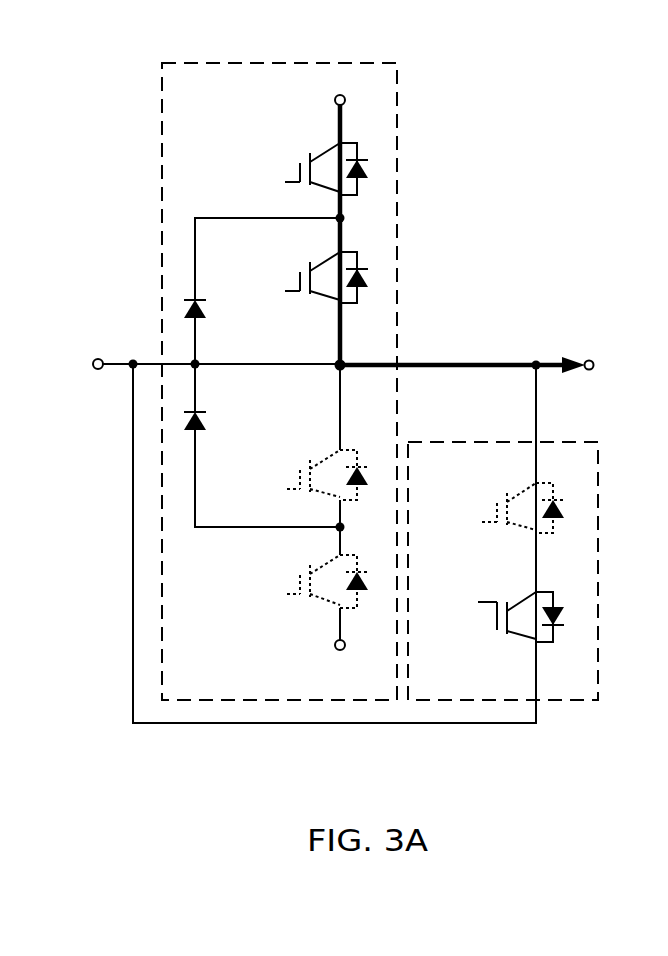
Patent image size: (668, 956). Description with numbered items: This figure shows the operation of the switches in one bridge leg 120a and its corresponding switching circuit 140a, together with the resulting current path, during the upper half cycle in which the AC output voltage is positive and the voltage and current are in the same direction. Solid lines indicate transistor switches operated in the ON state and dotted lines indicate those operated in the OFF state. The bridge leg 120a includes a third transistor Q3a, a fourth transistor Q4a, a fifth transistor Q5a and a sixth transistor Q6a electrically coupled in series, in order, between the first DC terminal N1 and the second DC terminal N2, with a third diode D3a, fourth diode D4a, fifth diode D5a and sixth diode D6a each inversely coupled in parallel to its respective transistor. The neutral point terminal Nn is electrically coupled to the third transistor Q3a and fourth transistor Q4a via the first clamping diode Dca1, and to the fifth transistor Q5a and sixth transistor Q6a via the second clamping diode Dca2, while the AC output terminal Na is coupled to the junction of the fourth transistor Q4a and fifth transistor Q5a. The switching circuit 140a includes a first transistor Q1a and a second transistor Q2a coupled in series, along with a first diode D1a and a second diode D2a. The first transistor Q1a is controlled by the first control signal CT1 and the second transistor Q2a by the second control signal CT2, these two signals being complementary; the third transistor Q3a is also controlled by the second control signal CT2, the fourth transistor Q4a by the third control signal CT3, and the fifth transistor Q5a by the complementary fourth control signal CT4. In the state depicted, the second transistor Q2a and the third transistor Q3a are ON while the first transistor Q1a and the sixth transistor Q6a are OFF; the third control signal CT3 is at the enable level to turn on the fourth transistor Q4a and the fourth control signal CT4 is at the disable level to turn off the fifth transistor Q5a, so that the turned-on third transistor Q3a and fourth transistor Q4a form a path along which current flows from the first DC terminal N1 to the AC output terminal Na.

The bridge leg 120a is at (346, 63).
The switching circuit 140a is at (497, 442).
The first DC terminal N1 is at (322, 100).
The second DC terminal N2 is at (342, 664).
The neutral point terminal Nn is at (81, 366).
The AC output terminal Na is at (601, 365).
The first transistor Q1a is at (513, 523).
The second transistor Q2a is at (513, 629).
The third transistor Q3a is at (313, 179).
The fourth transistor Q4a is at (313, 287).
The fifth transistor Q5a is at (313, 487).
The sixth transistor Q6a is at (313, 593).
The first diode D1a is at (559, 495).
The second diode D2a is at (559, 605).
The third diode D3a is at (365, 156).
The fourth diode D4a is at (365, 264).
The fifth diode D5a is at (361, 462).
The sixth diode D6a is at (363, 570).
The first clamping diode Dca1 is at (217, 326).
The second clamping diode Dca2 is at (218, 407).
The first control signal CT1 is at (367, 562).
The second control signal CT2 is at (367, 395).
The third control signal CT3 is at (269, 287).
The fourth control signal CT4 is at (269, 490).